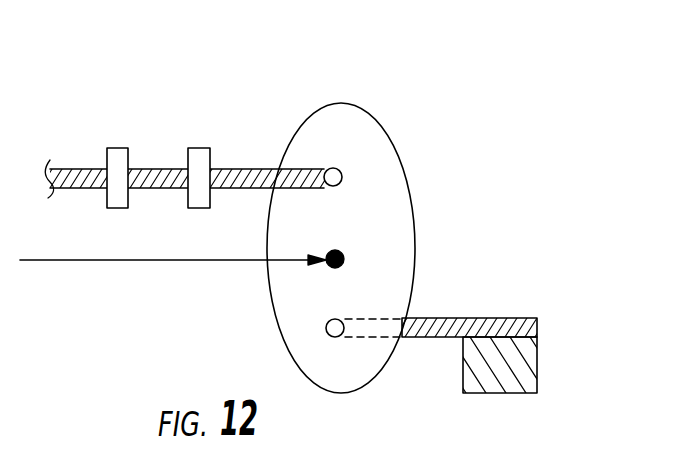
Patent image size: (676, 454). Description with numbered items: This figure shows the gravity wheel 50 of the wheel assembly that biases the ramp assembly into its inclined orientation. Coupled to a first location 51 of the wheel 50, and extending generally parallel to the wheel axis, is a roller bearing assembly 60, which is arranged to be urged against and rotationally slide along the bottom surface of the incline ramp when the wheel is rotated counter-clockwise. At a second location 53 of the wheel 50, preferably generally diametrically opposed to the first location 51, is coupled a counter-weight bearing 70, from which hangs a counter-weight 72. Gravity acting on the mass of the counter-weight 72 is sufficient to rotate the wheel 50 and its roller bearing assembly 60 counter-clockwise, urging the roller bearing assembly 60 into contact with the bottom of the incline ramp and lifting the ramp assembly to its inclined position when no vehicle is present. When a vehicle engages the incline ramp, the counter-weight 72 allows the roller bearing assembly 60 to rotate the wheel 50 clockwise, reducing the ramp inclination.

The gravity wheel 50 is at (383, 127).
The first location 51 is at (343, 176).
The second location 53 is at (325, 328).
The roller bearing assembly 60 is at (195, 148).
The counter-weight bearing 70 is at (445, 318).
The counter-weight 72 is at (538, 352).